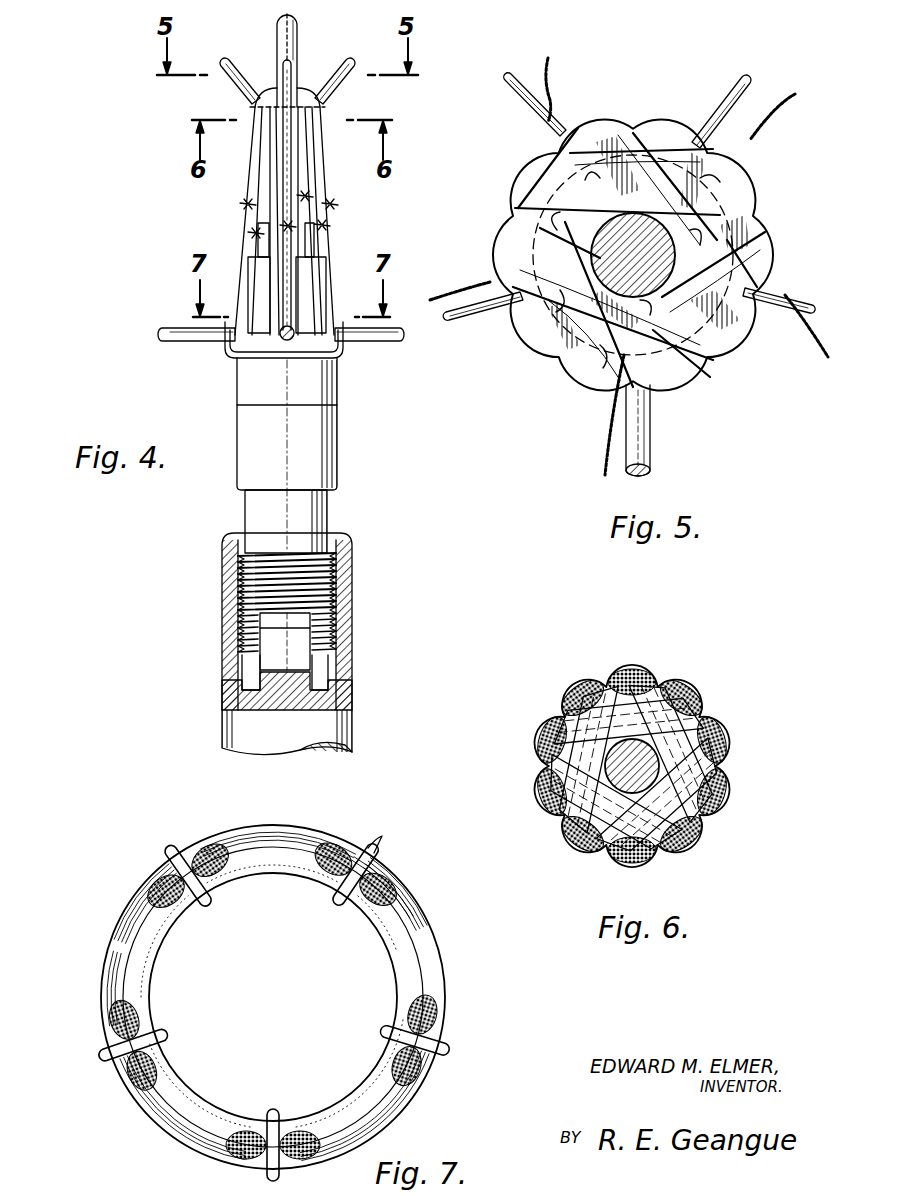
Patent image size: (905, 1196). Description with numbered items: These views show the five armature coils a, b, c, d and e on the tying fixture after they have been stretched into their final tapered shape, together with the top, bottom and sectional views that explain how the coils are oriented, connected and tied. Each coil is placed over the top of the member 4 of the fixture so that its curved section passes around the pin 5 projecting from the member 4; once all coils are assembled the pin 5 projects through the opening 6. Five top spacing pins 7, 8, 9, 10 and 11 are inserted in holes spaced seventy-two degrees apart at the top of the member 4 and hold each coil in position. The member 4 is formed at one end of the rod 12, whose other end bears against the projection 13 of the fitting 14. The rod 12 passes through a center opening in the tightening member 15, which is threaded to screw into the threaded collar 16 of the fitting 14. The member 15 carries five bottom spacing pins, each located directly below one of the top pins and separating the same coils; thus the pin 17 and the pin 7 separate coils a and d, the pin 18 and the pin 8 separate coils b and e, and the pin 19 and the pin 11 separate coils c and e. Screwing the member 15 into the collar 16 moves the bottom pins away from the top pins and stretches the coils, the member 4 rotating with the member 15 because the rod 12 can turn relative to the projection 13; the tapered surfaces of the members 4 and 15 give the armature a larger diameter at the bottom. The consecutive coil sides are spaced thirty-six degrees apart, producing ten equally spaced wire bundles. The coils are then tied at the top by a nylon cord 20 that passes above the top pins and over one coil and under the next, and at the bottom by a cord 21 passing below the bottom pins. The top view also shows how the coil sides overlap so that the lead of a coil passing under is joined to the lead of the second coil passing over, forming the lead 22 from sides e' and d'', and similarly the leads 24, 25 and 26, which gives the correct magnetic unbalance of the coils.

In FIG. 4, the member 4 is at (258, 187).
In FIG. 4, the pin 5 is at (291, 29).
In FIG. 5, the pin 5 is at (672, 281).
In FIG. 6, the pin 5 is at (631, 746).
In FIG. 4, the opening 6 is at (259, 151).
In FIG. 4, the top spacing pin 7 is at (291, 68).
In FIG. 5, the top spacing pin 7 is at (640, 450).
In FIG. 4, the top spacing pin 8 is at (241, 81).
In FIG. 5, the top spacing pin 8 is at (472, 322).
In FIG. 5, the top spacing pin 9 is at (522, 112).
In FIG. 5, the top spacing pin 10 is at (737, 93).
In FIG. 4, the top spacing pin 11 is at (334, 96).
In FIG. 5, the top spacing pin 11 is at (800, 304).
In FIG. 4, the rod 12 is at (287, 243).
In FIG. 4, the projection 13 is at (272, 653).
In FIG. 4, the fitting 14 is at (326, 723).
In FIG. 4, the tightening member 15 is at (315, 453).
In FIG. 4, the threaded collar 16 is at (343, 599).
In FIG. 4, the bottom spacing pin 17 is at (286, 345).
In FIG. 4, the bottom spacing pin 18 is at (184, 341).
In FIG. 4, the bottom spacing pin 19 is at (384, 341).
In FIG. 6, the nylon cord 20 is at (664, 676).
In FIG. 7, the cord 21 is at (342, 900).
In FIG. 5, the lead 22 is at (607, 450).
In FIG. 5, the lead 24 is at (548, 76).
In FIG. 5, the lead 25 is at (773, 106).
In FIG. 5, the lead 26 is at (810, 365).
In FIG. 4, the coil a is at (268, 292).
In FIG. 5, the coil a is at (596, 120).
In FIG. 6, the coil a is at (612, 675).
In FIG. 7, the coil a is at (244, 1155).
In FIG. 5, the coil b is at (744, 180).
In FIG. 6, the coil b is at (532, 764).
In FIG. 7, the coil b is at (110, 1018).
In FIG. 4, the coil c is at (326, 318).
In FIG. 5, the coil c is at (517, 178).
In FIG. 6, the coil c is at (602, 860).
In FIG. 7, the coil c is at (222, 835).
In FIG. 5, the coil d is at (676, 118).
In FIG. 6, the coil d is at (715, 828).
In FIG. 7, the coil d is at (420, 950).
In FIG. 4, the coil e is at (329, 193).
In FIG. 5, the coil e is at (506, 230).
In FIG. 6, the coil e is at (718, 712).
In FIG. 7, the coil e is at (415, 1070).